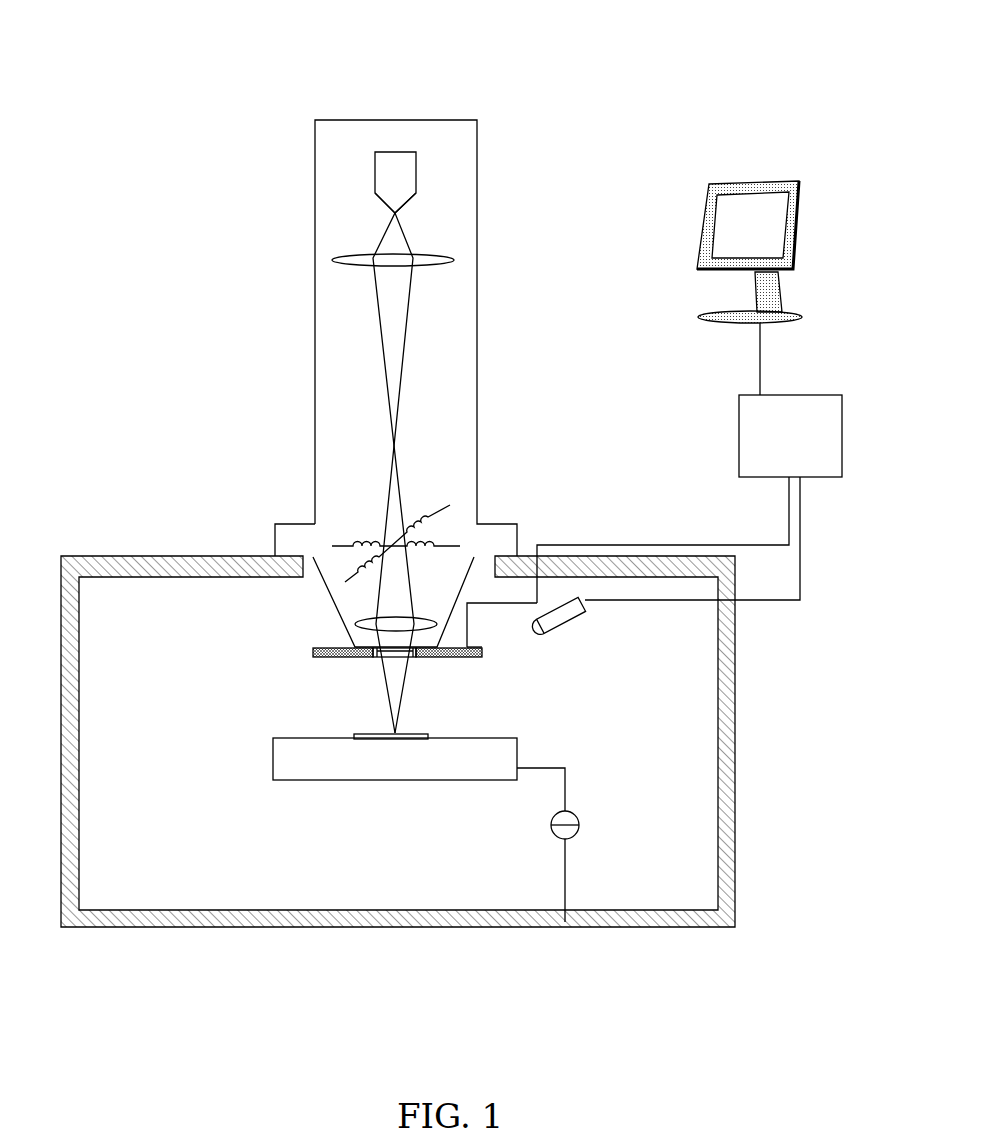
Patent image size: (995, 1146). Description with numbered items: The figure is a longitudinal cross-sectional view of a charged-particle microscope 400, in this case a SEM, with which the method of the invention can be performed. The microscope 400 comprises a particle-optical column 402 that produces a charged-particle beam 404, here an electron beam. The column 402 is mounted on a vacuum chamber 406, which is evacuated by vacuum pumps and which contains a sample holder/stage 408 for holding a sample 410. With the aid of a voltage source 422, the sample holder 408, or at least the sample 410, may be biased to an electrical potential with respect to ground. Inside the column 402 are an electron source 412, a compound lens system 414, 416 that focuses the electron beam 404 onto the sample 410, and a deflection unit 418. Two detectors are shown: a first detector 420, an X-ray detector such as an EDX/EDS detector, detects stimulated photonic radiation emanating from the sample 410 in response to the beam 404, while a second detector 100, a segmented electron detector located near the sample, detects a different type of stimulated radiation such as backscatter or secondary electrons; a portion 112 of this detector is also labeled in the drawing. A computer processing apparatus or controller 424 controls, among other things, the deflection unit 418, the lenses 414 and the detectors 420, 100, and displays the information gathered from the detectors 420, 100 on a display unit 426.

The charged-particle microscope 400 is at (180, 75).
The particle-optical column 402 is at (273, 233).
The electron source 412 is at (395, 172).
The compound lens system 414 is at (440, 253).
The deflection unit 418 is at (432, 518).
The compound lens system 416 is at (430, 620).
The vacuum chamber 406 is at (135, 568).
The second detector 100 is at (326, 634).
The sample holder aperture 112 is at (395, 659).
The charged-particle beam 404 is at (397, 707).
The sample 410 is at (430, 735).
The sample holder/stage 408 is at (293, 767).
The voltage source 422 is at (555, 832).
The first detector 420 is at (567, 617).
The computer processing apparatus 424 is at (760, 406).
The display unit 426 is at (758, 234).